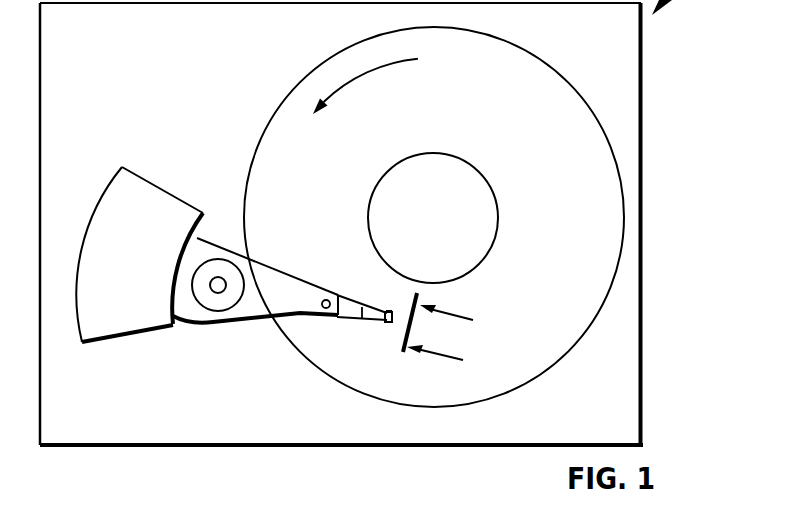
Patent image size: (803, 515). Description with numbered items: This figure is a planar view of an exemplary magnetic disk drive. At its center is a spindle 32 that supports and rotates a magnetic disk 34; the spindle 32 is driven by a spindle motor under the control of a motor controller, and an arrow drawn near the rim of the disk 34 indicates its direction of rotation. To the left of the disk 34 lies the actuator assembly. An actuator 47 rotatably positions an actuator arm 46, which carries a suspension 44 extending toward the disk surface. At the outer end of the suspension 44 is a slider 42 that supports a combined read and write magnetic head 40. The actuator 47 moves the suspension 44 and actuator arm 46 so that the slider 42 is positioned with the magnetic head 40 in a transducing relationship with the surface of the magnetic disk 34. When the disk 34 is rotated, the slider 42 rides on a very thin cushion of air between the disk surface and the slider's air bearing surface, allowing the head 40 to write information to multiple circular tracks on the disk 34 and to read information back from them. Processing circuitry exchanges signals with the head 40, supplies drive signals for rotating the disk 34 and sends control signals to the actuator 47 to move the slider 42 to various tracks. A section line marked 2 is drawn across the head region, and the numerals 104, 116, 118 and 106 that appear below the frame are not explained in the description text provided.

The section line 2- 2 is at (450, 338).
The spindle 32 is at (455, 154).
The magnetic disk 34 is at (556, 218).
The combined read and write magnetic head 40 is at (392, 322).
The slider 42 is at (386, 310).
The suspension 44 is at (345, 320).
The actuator arm 46 is at (263, 263).
The actuator 47 is at (153, 184).
The reference numeral 104 is at (143, 498).
The reference numeral 116 is at (189, 505).
The reference numeral 118 is at (274, 503).
The reference numeral 106 is at (320, 505).